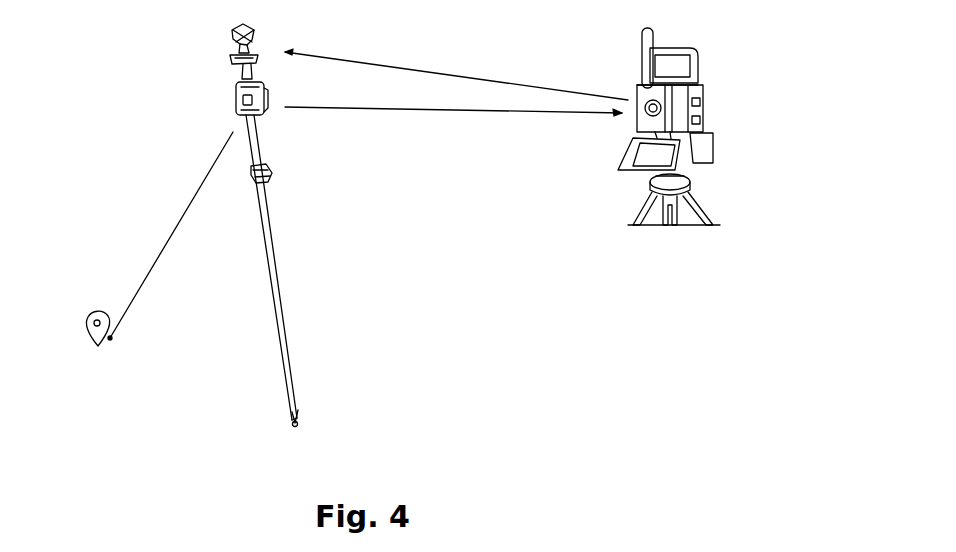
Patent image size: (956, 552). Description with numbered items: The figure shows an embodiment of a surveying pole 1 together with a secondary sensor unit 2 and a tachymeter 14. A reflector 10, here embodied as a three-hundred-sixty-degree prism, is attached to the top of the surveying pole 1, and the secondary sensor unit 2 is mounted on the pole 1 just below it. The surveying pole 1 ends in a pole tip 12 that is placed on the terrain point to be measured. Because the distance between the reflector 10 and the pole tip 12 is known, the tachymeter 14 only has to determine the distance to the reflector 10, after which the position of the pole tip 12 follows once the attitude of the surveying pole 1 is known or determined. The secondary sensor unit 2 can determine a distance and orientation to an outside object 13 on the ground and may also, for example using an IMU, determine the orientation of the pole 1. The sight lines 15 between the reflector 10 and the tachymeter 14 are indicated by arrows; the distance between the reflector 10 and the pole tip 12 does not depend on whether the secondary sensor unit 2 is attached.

The surveying pole 1 is at (287, 230).
The secondary sensor unit 2 is at (240, 98).
The reflector 10 is at (233, 50).
The pole tip 12 is at (298, 412).
The outside object 13 is at (110, 338).
The tachymeter 14 is at (637, 133).
The measuring beams 15 is at (456, 82).